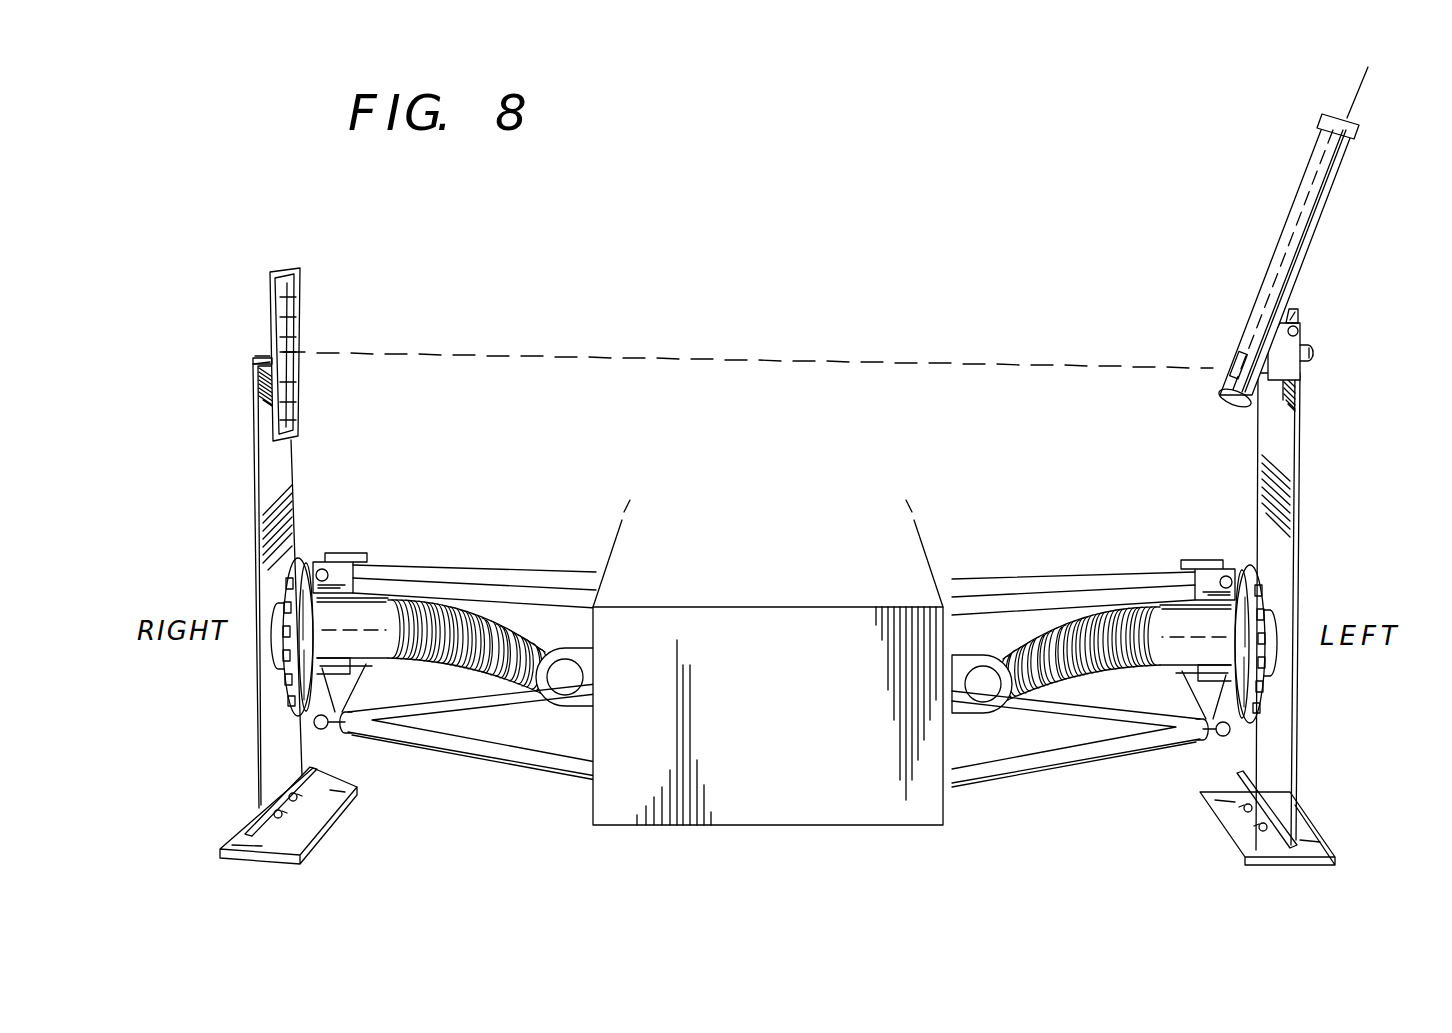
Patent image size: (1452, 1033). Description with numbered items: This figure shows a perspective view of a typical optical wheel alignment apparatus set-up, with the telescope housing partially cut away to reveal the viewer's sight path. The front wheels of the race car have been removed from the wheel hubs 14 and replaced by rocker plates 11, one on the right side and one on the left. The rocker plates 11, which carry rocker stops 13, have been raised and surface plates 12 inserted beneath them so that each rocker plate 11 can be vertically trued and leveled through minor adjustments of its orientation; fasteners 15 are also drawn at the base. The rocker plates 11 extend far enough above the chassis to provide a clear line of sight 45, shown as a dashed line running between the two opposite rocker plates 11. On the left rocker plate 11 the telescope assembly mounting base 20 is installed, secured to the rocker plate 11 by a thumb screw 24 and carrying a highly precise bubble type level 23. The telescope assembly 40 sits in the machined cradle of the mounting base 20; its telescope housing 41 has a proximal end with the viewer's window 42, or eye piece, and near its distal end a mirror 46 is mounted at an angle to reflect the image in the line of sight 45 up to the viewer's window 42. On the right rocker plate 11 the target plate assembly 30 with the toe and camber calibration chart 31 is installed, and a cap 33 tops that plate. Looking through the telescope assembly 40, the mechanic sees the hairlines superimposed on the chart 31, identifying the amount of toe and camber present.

The rocker plate 11 is at (288, 490).
The surface plate 12 is at (1310, 838).
The rocker stop 13 is at (1227, 778).
The wheel hub 14 is at (293, 700).
The bolts 15 is at (283, 814).
The telescope assembly mounting base 20 is at (1290, 343).
The bubble type level 23 is at (1292, 306).
The thumb screw 24 is at (1315, 353).
The target plate assembly 30 is at (298, 437).
The toe and camber calibration chart 31 is at (290, 328).
The post cap 33 is at (262, 357).
The telescope assembly 40 is at (1290, 228).
The telescope housing 41 is at (1265, 277).
The viewer's window 42 is at (1337, 118).
The line of sight 45 is at (764, 358).
The mirror 46 is at (1245, 362).